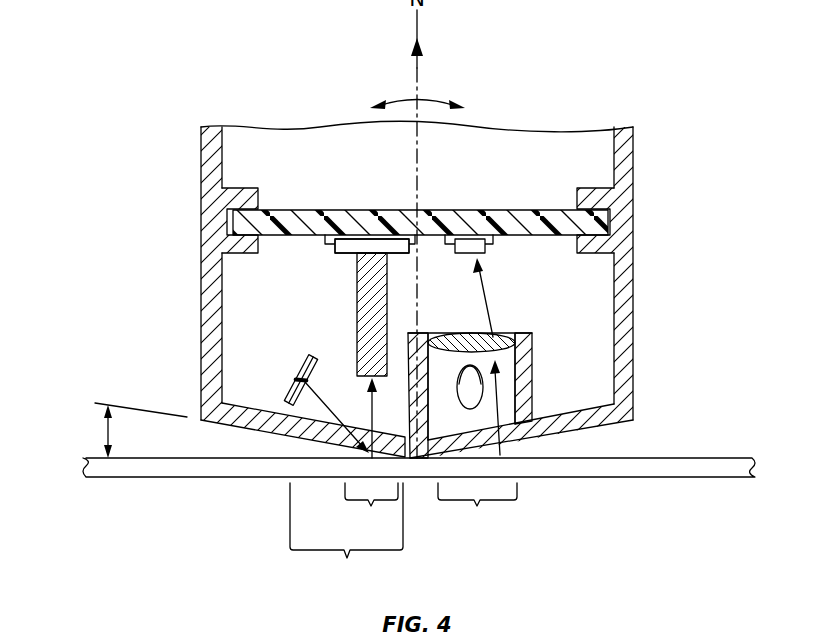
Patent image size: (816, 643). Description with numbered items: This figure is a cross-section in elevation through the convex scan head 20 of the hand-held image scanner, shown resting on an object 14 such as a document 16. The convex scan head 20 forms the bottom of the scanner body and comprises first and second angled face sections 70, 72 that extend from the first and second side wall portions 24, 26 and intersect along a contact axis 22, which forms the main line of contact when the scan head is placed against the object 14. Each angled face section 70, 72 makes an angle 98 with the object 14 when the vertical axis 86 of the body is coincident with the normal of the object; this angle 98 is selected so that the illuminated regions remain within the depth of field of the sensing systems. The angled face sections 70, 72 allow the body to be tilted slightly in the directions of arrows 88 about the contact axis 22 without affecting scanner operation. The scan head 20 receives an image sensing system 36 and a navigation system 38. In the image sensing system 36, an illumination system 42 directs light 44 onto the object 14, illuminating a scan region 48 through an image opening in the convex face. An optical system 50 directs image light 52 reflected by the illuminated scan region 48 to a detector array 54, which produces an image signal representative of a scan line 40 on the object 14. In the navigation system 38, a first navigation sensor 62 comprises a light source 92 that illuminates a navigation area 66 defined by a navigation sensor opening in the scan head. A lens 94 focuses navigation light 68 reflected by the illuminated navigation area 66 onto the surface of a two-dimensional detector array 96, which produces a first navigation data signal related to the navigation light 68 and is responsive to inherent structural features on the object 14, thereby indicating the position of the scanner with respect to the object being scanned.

The convex scan head 20 is at (148, 88).
The first side wall portion 24 is at (201, 195).
The second side wall portion 26 is at (637, 190).
The image sensing system 36 is at (250, 307).
The navigation system 38 is at (588, 333).
The detector array 54 is at (346, 254).
The optical system 50 is at (357, 313).
The image light 52 is at (372, 417).
The illumination system 42 is at (298, 367).
The light 44 is at (300, 420).
The first angled face section 70 is at (203, 421).
The second angled face section 72 is at (635, 422).
The first navigation sensor 62 is at (533, 360).
The lens 94 is at (508, 333).
The navigation light 68 is at (500, 390).
The two-dimensional detector array 96 is at (455, 255).
The light source 92 is at (480, 405).
The object 14 is at (104, 486).
The document 16 is at (705, 477).
The angle 98 is at (105, 430).
The contact axis 22 is at (418, 459).
The scan line 40 is at (371, 510).
The scan region 48 is at (346, 537).
The navigation area 66 is at (477, 510).
The vertical axis 86 is at (417, 66).
The arrows 88 is at (405, 100).